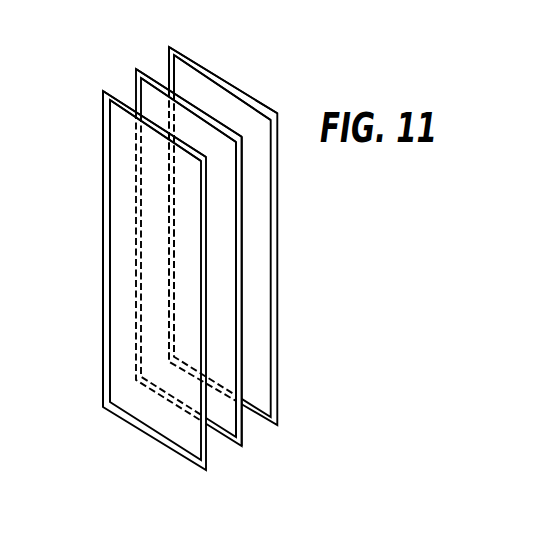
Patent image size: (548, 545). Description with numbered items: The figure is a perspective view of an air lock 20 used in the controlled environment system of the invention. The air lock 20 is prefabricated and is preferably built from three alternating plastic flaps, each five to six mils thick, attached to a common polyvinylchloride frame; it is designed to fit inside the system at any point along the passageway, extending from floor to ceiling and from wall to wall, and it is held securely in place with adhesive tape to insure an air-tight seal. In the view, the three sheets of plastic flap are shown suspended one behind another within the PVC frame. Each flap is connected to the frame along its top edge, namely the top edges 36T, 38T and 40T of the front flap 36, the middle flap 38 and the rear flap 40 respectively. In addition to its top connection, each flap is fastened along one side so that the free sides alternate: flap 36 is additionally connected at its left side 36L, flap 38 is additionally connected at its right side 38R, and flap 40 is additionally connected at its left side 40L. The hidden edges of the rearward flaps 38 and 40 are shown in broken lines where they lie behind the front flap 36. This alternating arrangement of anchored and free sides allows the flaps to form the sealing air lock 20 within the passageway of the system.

The air lock 20 is at (285, 64).
The flap 36 is at (186, 438).
The top edge of flap 36 36T is at (117, 98).
The side of flap 36 36L is at (107, 302).
The flap 38 is at (231, 432).
The top edge of flap 38 38T is at (154, 81).
The side of flap 38 38R is at (238, 284).
The flap 40 is at (275, 377).
The top edge of flap 40 40T is at (196, 62).
The side of flap 40 40L is at (174, 181).